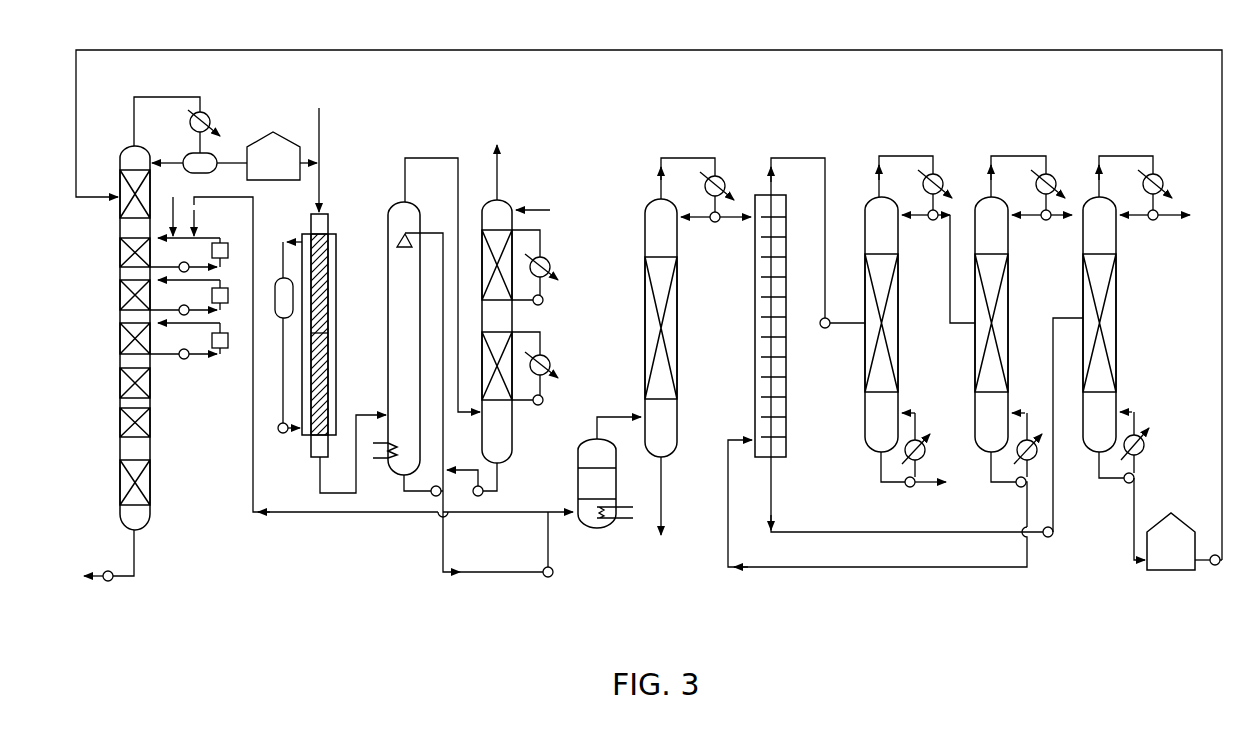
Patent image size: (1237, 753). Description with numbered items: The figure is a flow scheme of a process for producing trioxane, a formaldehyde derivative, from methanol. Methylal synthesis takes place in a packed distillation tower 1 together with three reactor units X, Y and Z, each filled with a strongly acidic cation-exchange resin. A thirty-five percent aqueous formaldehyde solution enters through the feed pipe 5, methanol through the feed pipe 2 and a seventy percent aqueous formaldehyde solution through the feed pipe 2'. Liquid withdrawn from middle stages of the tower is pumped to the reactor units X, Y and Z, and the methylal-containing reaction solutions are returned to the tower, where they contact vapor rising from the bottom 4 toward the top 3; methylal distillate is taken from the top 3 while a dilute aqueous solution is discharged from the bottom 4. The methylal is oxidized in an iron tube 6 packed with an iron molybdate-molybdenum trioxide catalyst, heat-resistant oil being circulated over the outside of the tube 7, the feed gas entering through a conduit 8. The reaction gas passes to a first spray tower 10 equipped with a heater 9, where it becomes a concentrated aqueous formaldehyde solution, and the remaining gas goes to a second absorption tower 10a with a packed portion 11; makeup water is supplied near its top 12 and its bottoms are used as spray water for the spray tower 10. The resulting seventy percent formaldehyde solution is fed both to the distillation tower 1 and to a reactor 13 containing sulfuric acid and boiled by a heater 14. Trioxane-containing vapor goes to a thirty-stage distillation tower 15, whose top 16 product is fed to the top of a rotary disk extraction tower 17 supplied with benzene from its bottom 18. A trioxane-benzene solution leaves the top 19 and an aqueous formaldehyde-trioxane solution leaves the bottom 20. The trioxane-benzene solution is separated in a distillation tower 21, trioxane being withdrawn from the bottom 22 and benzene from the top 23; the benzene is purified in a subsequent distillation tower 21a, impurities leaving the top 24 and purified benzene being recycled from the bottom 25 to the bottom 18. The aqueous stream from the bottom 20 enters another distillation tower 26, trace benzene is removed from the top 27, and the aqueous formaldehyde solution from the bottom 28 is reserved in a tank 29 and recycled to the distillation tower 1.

The distillation tower 1 is at (120, 265).
The feed pipe 2 is at (180, 210).
The feed pipe 2' is at (211, 220).
The top of the distillation tower 3 is at (134, 130).
The bottom of the distillation tower 4 is at (137, 552).
The feed pipe 5 is at (104, 196).
The iron tube 6 is at (329, 227).
The tube 7 is at (336, 298).
The conduit 8 is at (321, 189).
The heater 9 is at (388, 460).
The first spray tower 10 is at (388, 346).
The second absorption tower 10a is at (482, 207).
The packed portion 11 is at (482, 366).
The top of the second absorption tower 12 is at (498, 195).
The reactor 13 is at (616, 486).
The heater 14 is at (614, 526).
The distillation tower 15 is at (678, 316).
The top of the distillation tower 16 is at (660, 186).
The rotary disk extraction tower 17 is at (786, 303).
The bottom of the extraction tower 18 is at (746, 438).
The top of the extraction tower 19 is at (772, 192).
The bottom of the extraction tower 20 is at (772, 497).
The distillation tower 21 is at (865, 300).
The subsequent distillation tower 21a is at (975, 356).
The bottom of the distillation tower 22 is at (881, 473).
The top of the distillation tower 23 is at (879, 186).
The top of the subsequent distillation tower 24 is at (991, 186).
The bottom of the subsequent distillation tower 25 is at (991, 473).
The distillation tower 26 is at (1116, 344).
The top of the distillation tower 27 is at (1097, 181).
The bottom of the distillation tower 28 is at (1099, 470).
The tank 29 is at (1192, 518).
The reactor unit X is at (228, 253).
The reactor unit Y is at (228, 298).
The reactor unit Z is at (228, 343).